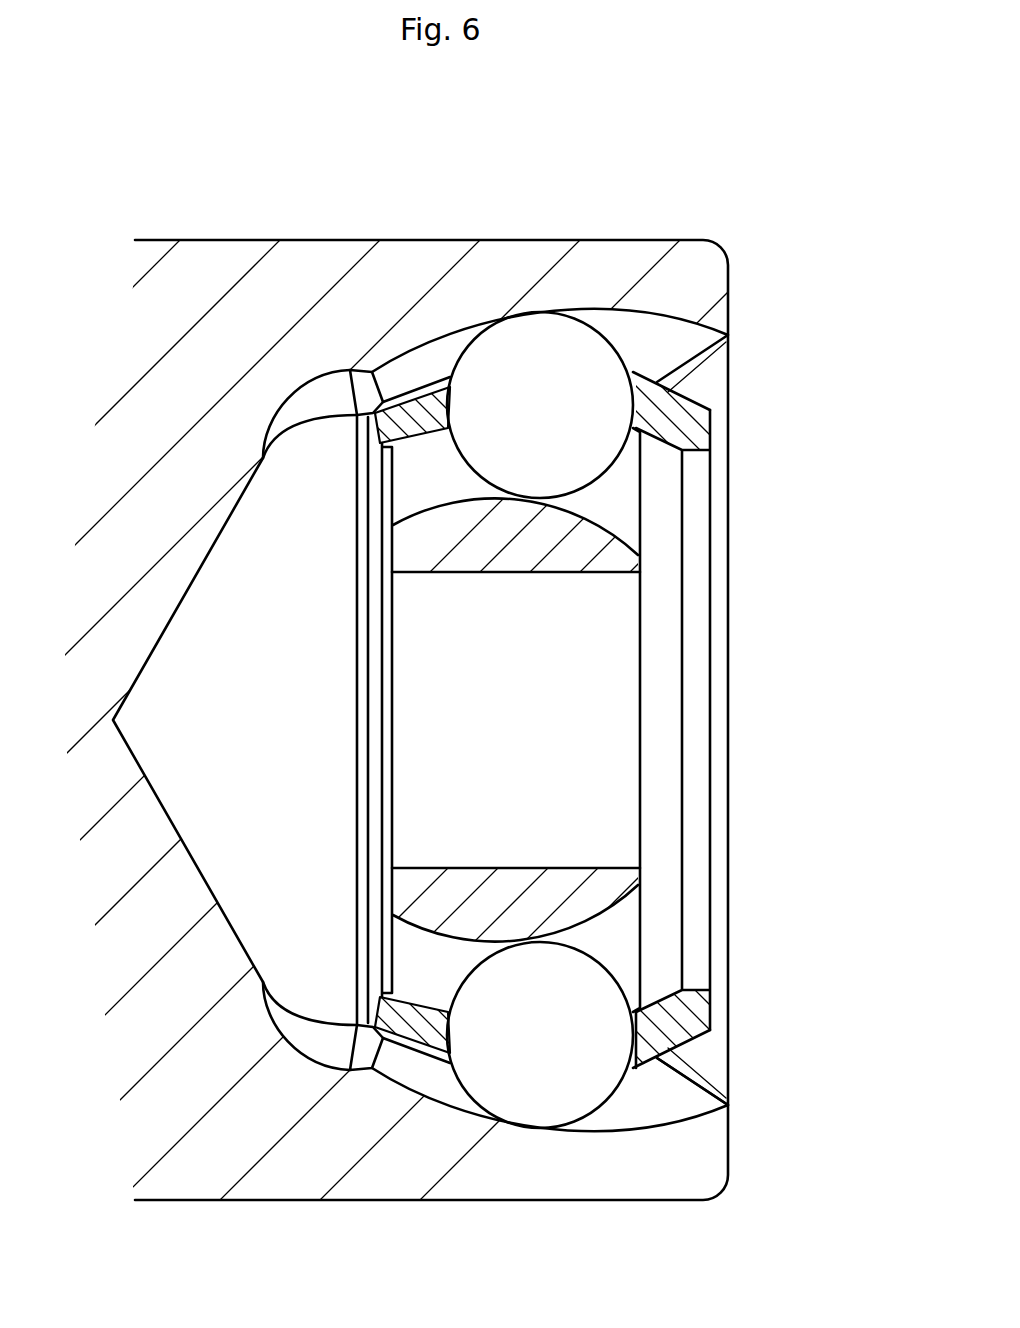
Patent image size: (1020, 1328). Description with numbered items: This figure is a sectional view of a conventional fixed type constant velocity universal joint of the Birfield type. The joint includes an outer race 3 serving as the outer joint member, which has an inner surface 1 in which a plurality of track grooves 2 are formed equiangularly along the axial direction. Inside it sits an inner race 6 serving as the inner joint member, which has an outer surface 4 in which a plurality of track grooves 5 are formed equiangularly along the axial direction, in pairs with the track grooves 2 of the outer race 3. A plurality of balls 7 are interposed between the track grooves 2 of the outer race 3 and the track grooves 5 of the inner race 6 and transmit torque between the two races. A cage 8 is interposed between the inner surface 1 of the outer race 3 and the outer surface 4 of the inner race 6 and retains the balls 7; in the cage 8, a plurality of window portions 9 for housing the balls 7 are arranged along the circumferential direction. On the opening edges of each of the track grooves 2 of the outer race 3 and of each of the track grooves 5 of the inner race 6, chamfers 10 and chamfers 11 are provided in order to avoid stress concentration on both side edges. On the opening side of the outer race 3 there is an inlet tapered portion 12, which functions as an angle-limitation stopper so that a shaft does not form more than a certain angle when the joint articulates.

The inner surface 1 is at (358, 368).
The track grooves 2 is at (642, 330).
The outer race 3 is at (599, 242).
The outer surface 4 is at (426, 1012).
The track grooves 5 is at (418, 493).
The inner race 6 is at (641, 871).
The balls 7 is at (548, 335).
The cage 8 is at (710, 1005).
The window portions 9 is at (625, 1042).
The chamfers 10 is at (405, 413).
The chamfers 11 is at (420, 470).
The inlet tapered portion 12 is at (698, 1088).